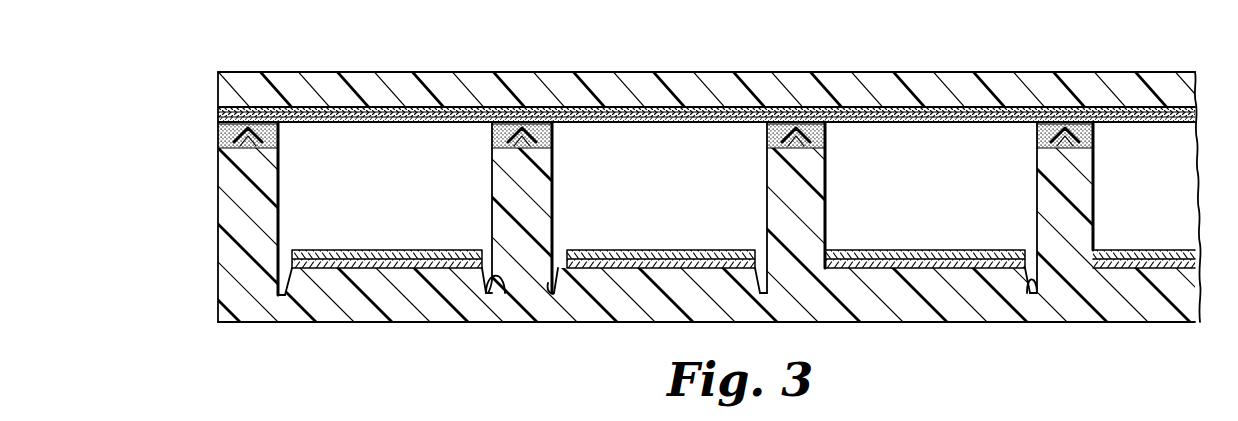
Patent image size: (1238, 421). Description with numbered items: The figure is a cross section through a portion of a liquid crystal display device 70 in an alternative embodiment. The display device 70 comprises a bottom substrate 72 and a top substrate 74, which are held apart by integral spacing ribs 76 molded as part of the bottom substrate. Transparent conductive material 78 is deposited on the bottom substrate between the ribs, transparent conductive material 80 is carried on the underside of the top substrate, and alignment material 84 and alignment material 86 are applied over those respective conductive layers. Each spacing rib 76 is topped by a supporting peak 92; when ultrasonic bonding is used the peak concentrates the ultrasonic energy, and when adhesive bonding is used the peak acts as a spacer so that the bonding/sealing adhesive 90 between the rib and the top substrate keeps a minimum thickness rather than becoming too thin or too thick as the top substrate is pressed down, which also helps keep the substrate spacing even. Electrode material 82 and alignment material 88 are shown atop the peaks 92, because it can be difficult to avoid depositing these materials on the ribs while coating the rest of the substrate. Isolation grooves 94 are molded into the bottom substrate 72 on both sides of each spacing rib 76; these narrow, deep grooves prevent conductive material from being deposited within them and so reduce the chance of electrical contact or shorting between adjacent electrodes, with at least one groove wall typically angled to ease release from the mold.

The display device 70 is at (222, 63).
The bottom substrate 72 is at (436, 310).
The top substrate 74 is at (433, 80).
The integral spacing ribs 76 is at (278, 211).
The transparent conductive material 78 is at (370, 270).
The transparent conductive material 80 is at (218, 111).
The electrode material 82 is at (280, 148).
The alignment material 84 is at (400, 250).
The alignment material 86 is at (218, 120).
The alignment material 88 is at (218, 138).
The bonding/sealing adhesive 90 is at (280, 126).
The supporting peaks 92 is at (245, 143).
The isolation grooves 94 is at (497, 282).